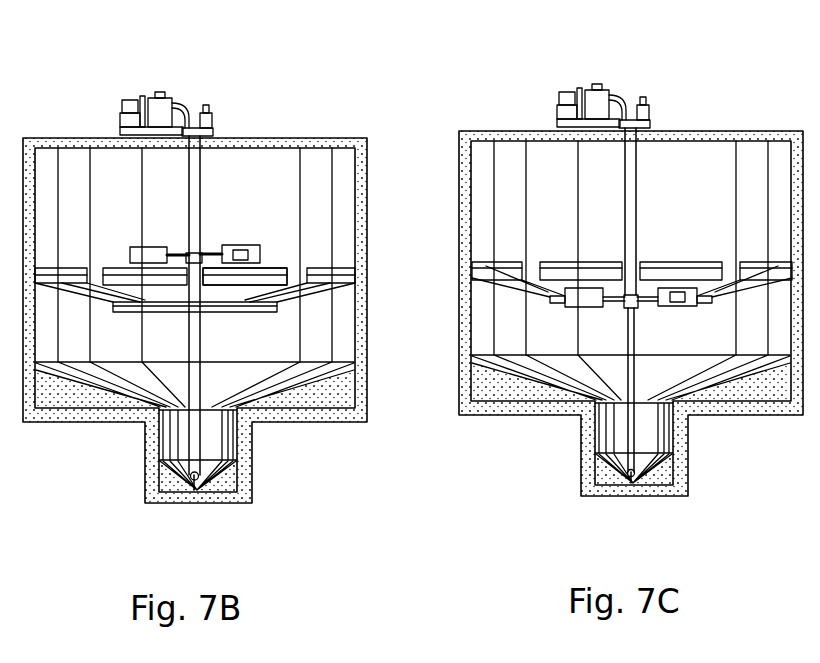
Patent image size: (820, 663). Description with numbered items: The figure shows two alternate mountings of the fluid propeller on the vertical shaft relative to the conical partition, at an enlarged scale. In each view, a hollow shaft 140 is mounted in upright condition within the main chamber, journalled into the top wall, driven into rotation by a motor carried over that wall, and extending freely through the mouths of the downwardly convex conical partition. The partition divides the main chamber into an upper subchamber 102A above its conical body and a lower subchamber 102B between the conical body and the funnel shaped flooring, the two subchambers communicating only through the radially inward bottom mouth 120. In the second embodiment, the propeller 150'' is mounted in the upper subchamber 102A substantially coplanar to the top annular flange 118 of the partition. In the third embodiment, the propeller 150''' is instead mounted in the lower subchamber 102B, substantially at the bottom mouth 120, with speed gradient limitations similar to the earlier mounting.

In FIG. 7B, the upper subchamber 102A is at (157, 220).
In FIG. 7B, the top annular flange 118 is at (291, 275).
In FIG. 7B, the propeller 150'' is at (251, 177).
In FIG. 7C, the hollow shaft 140 is at (630, 223).
In FIG. 7C, the lower subchamber 102B is at (632, 303).
In FIG. 7C, the propeller 150''' is at (580, 385).
In FIG. 7C, the bottom mouth 120 is at (648, 301).